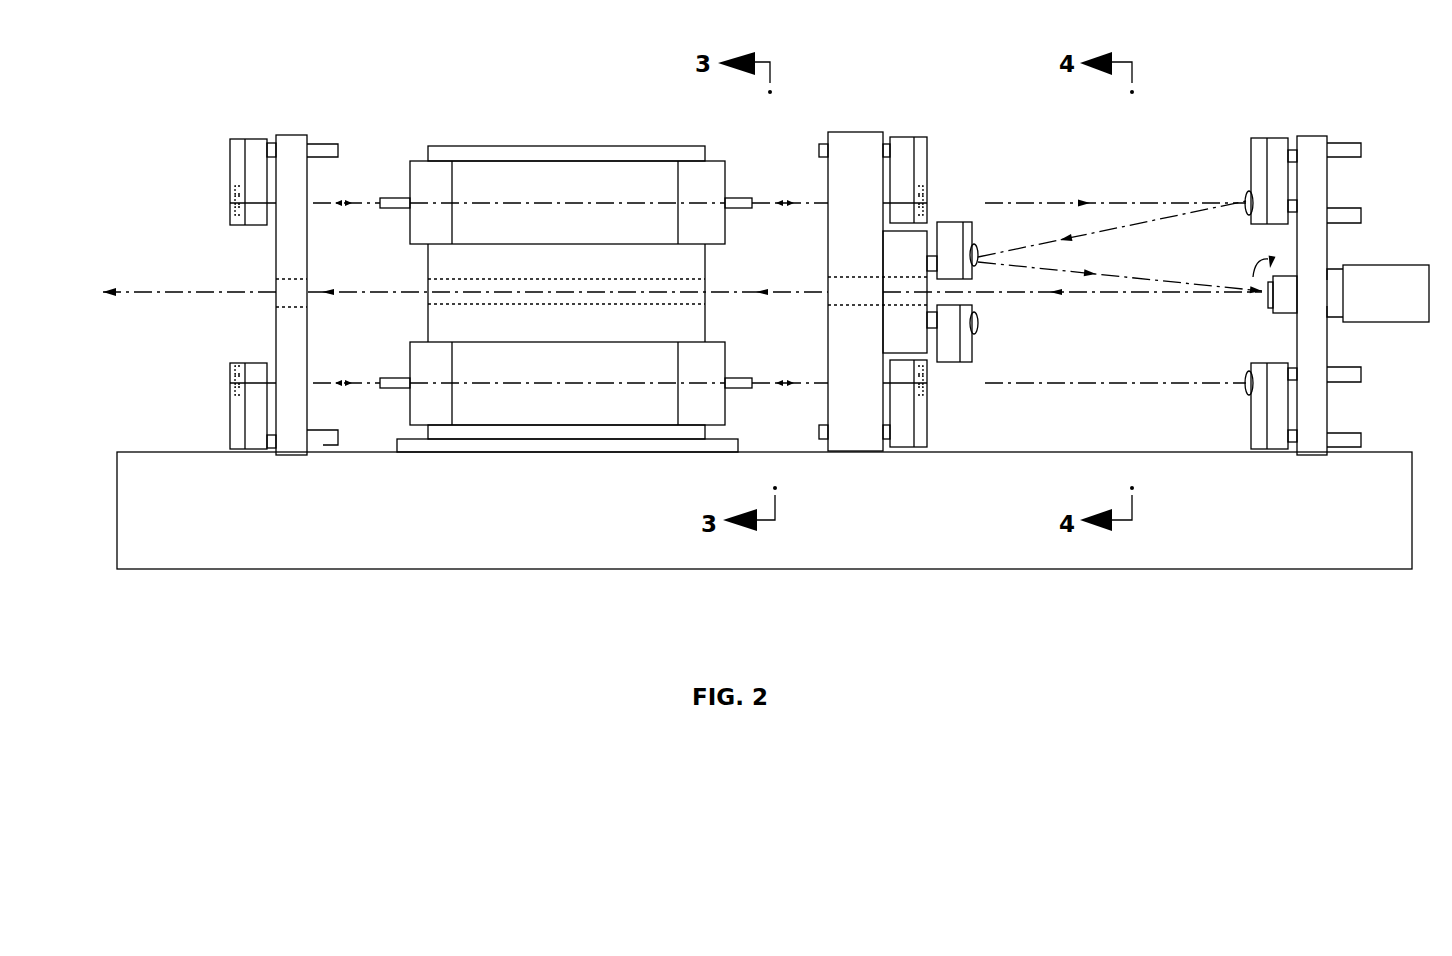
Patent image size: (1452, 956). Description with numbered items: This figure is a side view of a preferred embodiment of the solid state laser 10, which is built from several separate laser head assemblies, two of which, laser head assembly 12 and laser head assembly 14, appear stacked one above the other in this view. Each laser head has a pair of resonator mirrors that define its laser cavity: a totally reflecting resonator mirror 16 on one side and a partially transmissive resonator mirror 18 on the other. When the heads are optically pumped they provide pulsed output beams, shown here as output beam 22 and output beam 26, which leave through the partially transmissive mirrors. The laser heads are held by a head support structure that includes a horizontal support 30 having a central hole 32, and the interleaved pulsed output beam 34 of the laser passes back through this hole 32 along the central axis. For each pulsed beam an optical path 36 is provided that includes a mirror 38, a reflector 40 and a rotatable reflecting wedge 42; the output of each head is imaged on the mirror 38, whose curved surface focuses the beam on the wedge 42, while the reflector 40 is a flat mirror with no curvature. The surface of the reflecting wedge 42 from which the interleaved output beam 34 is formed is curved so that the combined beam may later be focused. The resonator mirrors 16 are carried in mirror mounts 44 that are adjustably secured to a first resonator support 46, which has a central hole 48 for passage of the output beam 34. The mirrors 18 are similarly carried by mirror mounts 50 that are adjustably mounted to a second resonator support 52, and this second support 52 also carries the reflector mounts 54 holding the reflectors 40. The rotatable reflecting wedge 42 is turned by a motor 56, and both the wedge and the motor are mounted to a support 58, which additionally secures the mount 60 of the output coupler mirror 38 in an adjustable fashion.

The solid state laser 10 is at (667, 626).
The laser head assembly 12 is at (417, 153).
The laser head assembly 14 is at (400, 350).
The resonator mirror 16 is at (231, 204).
The resonator mirror 18 is at (920, 200).
The output beam 22 is at (1047, 200).
The output beam 26 is at (1085, 383).
The horizontal support 30 is at (706, 267).
The central hole 32 is at (706, 304).
The interleaved pulsed output beam 34 is at (384, 296).
The optical path 36 is at (1155, 166).
The mirror 38 is at (1246, 197).
The reflector 40 is at (977, 252).
The rotatable reflecting wedge 42 is at (1265, 298).
The sensor bracket 44 is at (255, 139).
The first resonator support 46 is at (292, 135).
The central hole 48 is at (296, 278).
The mirror mount 50 is at (928, 146).
The second resonator support 52 is at (857, 132).
The reflector mount 54 is at (968, 222).
The motor 56 is at (1390, 265).
The support 58 is at (1329, 349).
The mount 60 is at (1277, 138).